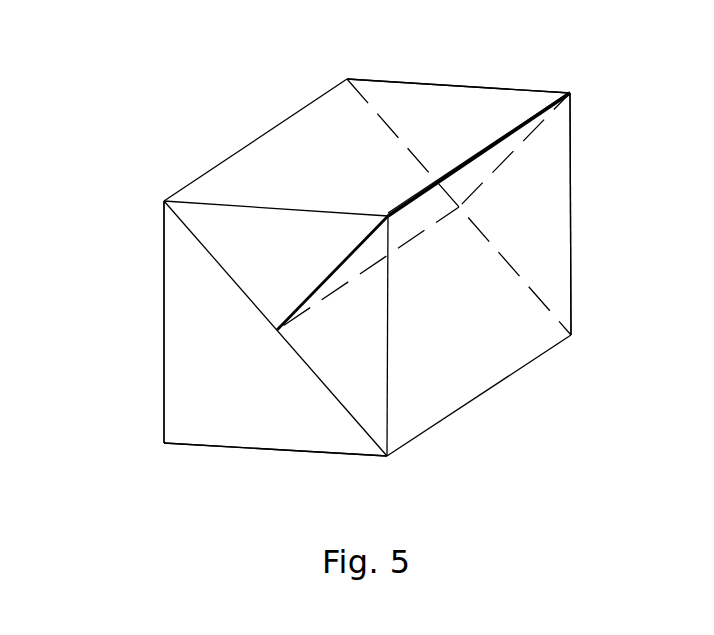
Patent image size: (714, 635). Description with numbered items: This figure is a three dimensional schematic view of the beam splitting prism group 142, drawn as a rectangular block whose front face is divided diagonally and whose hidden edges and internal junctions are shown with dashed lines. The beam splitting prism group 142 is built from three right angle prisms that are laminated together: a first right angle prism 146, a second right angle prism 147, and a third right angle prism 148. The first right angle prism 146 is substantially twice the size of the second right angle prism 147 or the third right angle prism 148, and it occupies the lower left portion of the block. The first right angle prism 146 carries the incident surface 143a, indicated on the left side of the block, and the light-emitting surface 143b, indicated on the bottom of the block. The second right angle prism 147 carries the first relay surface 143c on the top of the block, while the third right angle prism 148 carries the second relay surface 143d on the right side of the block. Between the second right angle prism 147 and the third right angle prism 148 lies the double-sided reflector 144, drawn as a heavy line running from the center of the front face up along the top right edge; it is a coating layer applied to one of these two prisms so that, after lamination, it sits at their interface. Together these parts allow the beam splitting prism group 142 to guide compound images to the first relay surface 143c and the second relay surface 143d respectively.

The beam splitting prism group 142 is at (70, 90).
The incident surface 143a is at (190, 345).
The light-emitting surface 143b is at (344, 427).
The first relay surface 143c is at (425, 118).
The second relay surface 143d is at (558, 243).
The double-sided reflector 144 is at (320, 286).
The first right angle prism 146 is at (237, 383).
The second right angle prism 147 is at (293, 265).
The third right angle prism 148 is at (377, 352).